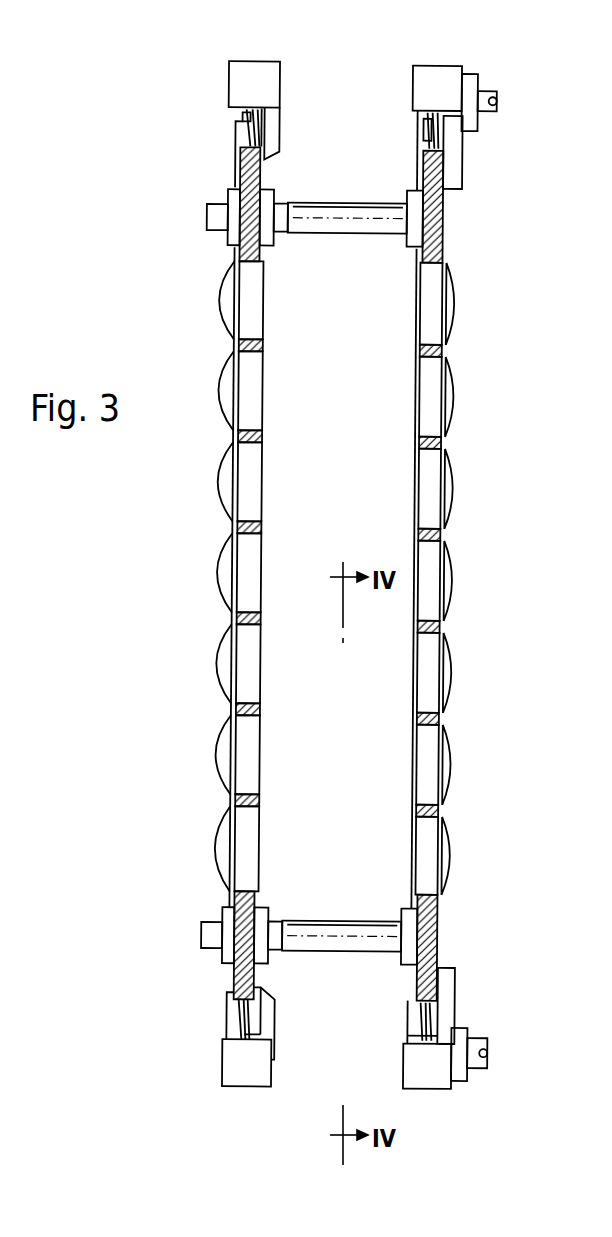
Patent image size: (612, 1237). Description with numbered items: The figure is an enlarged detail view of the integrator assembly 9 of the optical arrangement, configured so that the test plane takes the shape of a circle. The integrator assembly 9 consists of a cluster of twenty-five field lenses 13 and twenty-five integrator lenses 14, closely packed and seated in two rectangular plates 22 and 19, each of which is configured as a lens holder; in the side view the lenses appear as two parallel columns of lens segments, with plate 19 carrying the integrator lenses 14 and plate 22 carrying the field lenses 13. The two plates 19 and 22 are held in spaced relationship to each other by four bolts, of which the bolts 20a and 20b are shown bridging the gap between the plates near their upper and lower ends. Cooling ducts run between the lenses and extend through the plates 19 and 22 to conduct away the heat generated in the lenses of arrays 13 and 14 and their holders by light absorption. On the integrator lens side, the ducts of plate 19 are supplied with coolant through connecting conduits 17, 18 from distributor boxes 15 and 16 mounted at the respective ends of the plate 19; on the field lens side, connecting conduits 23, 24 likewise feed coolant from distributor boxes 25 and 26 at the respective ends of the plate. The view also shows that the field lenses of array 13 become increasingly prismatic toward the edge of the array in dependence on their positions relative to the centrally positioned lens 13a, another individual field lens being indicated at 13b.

The integrator assembly 9 is at (333, 108).
The field lenses 13 is at (472, 579).
The centrally positioned lens 13a is at (433, 575).
The lens element 13b is at (430, 750).
The integrator lenses 14 is at (214, 618).
The distributor box 15 is at (241, 82).
The distributor box 16 is at (247, 1075).
The connecting conduit 17 is at (241, 117).
The connecting conduit 18 is at (243, 1017).
The rectangular plate 19 is at (235, 257).
The bolt 20a is at (303, 237).
The bolt 20b is at (305, 922).
The rectangular plate 22 is at (440, 240).
The connecting conduit 23 is at (442, 140).
The connecting conduit 24 is at (450, 1013).
The distributor box 25 is at (436, 80).
The distributor box 26 is at (444, 1080).